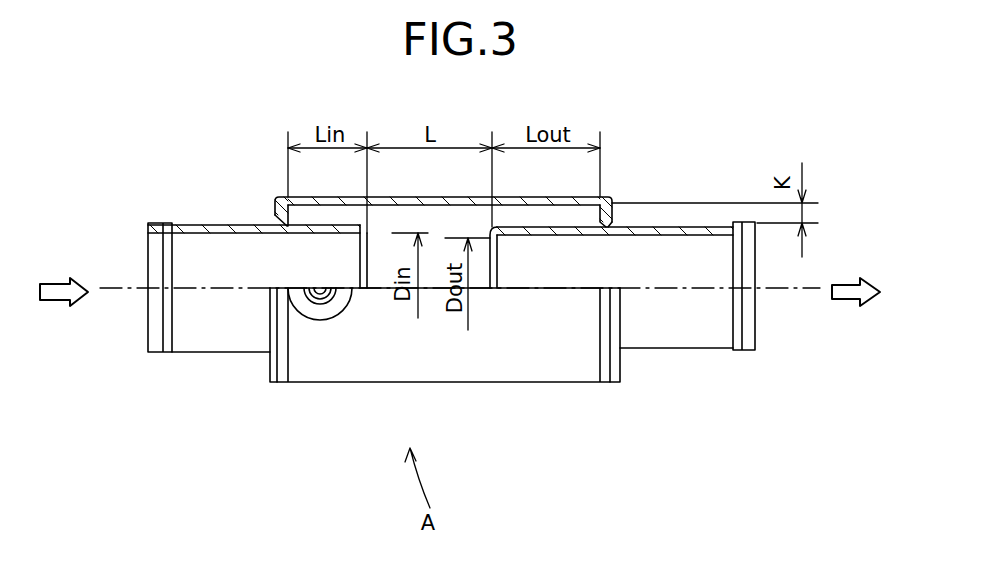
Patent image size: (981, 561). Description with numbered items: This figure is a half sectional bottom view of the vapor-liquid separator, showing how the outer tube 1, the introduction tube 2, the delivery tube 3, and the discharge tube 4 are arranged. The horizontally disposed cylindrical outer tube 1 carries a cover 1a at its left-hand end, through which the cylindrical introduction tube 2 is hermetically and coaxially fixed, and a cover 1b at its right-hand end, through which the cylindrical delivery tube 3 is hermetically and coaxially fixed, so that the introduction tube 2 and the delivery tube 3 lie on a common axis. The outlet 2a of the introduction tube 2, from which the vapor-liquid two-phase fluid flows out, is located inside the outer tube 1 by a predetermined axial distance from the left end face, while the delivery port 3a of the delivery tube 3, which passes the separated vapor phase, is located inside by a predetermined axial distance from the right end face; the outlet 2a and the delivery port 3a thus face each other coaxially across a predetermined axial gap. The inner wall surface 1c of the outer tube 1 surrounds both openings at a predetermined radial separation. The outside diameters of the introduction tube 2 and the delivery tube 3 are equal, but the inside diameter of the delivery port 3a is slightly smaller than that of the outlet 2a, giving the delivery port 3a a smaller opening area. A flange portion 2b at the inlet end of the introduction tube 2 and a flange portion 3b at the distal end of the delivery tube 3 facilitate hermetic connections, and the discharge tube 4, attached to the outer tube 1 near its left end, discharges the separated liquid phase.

The outer tube 1 is at (444, 299).
The cover 1a is at (272, 368).
The cover 1b is at (615, 366).
The inner wall surface 1c is at (398, 206).
The introduction tube 2 is at (273, 300).
The outlet 2a is at (368, 255).
The flange portion 2b is at (163, 223).
The delivery tube 3 is at (629, 324).
The delivery port 3a is at (478, 258).
The flange portion 3b is at (745, 350).
The discharge tube 4 is at (318, 320).